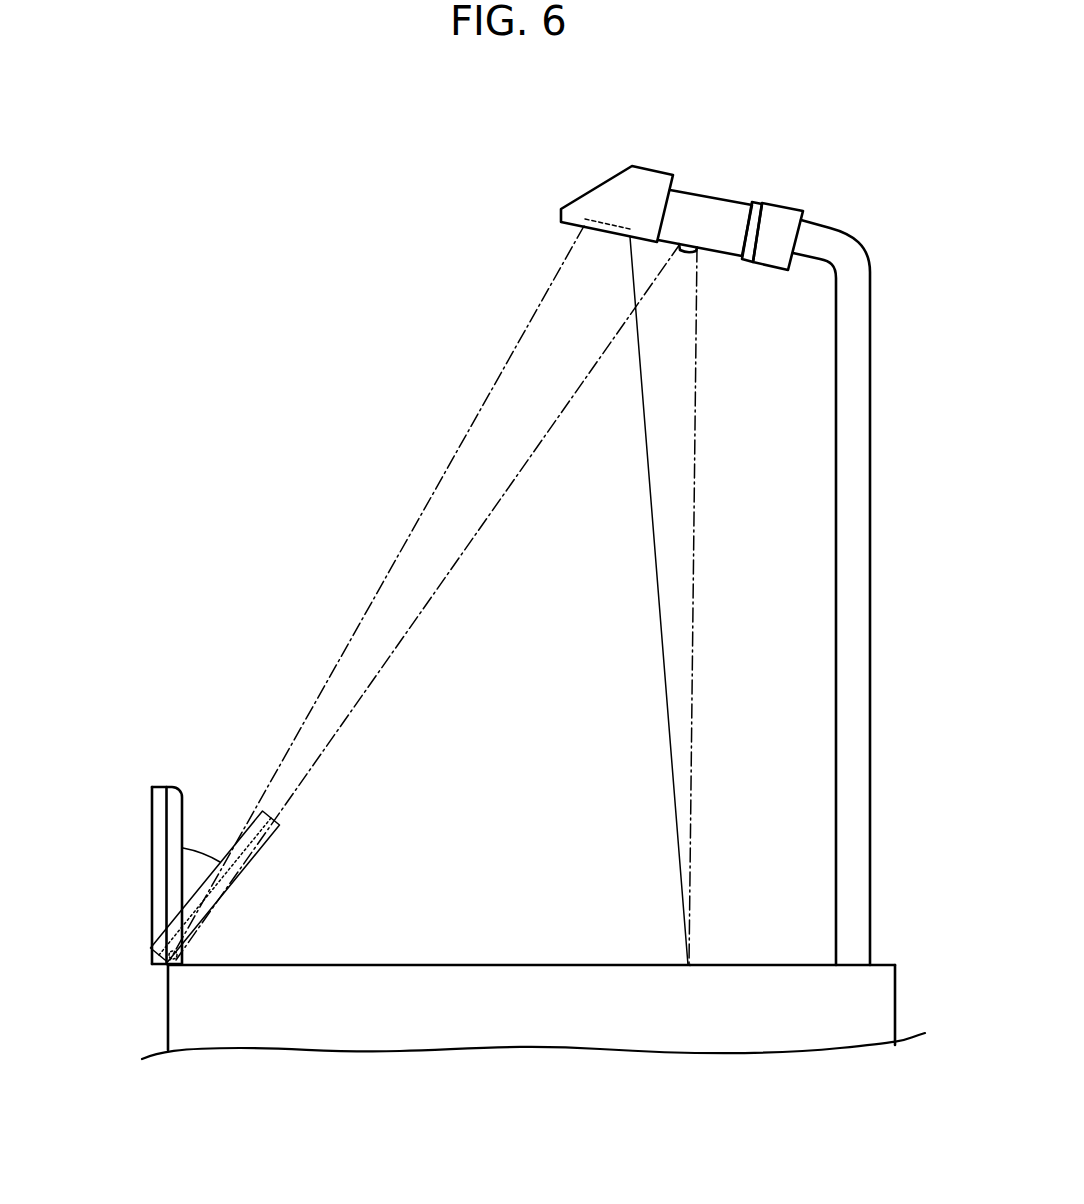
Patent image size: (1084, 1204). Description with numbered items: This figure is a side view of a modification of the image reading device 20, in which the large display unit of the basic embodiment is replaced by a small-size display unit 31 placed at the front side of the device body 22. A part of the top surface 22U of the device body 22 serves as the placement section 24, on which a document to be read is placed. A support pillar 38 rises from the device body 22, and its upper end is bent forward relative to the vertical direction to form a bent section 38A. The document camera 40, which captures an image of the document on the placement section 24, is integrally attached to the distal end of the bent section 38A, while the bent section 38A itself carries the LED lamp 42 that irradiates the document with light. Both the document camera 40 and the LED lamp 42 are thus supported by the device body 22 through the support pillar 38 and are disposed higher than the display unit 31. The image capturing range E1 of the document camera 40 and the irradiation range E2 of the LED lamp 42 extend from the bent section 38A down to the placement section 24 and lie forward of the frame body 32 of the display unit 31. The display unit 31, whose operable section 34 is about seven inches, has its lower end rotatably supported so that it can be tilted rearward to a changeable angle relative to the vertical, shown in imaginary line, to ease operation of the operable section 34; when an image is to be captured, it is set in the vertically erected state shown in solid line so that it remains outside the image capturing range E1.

The image reading device 20 is at (167, 1003).
The device body 22 is at (877, 997).
The top surface 22U is at (880, 965).
The placement section 24 is at (383, 964).
The small-size display unit 31 is at (149, 787).
The frame body 32 is at (160, 786).
The operable section 34 is at (152, 863).
The support pillar 38 is at (858, 708).
The bent section 38A is at (723, 212).
The document camera 40 is at (648, 181).
The LED lamp 42 is at (684, 250).
The image capturing range E1 is at (340, 670).
The irradiation range E2 is at (430, 600).